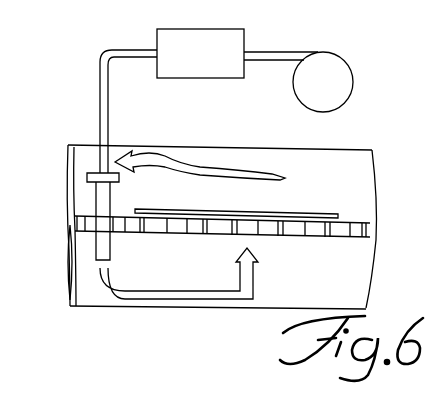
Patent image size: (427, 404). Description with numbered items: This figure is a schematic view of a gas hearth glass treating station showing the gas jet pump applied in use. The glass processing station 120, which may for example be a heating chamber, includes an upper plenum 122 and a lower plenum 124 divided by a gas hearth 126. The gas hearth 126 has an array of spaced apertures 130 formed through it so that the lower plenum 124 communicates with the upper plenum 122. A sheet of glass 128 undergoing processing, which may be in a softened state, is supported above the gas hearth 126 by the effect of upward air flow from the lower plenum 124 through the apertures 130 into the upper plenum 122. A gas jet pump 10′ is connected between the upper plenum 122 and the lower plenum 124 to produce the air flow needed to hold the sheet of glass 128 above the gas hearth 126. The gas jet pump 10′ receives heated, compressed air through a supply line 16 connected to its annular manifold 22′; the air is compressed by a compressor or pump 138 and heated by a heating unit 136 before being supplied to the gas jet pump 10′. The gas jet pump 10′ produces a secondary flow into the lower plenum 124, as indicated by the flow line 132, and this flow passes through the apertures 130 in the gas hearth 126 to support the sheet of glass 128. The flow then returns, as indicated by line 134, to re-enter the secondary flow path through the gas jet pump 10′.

The supply line 16 is at (122, 50).
The annular manifold 22′ is at (96, 172).
The gas jet pump 10′ is at (110, 191).
The glass processing station 120 is at (364, 140).
The upper plenum 122 is at (345, 196).
The lower plenum 124 is at (346, 278).
The gas hearth 126 is at (61, 281).
The sheet of glass 128 is at (238, 188).
The apertures 130 is at (180, 234).
The flow line 132 is at (212, 298).
The flow line 134 is at (250, 165).
The heating unit 136 is at (222, 44).
The compressor or pump 138 is at (340, 76).